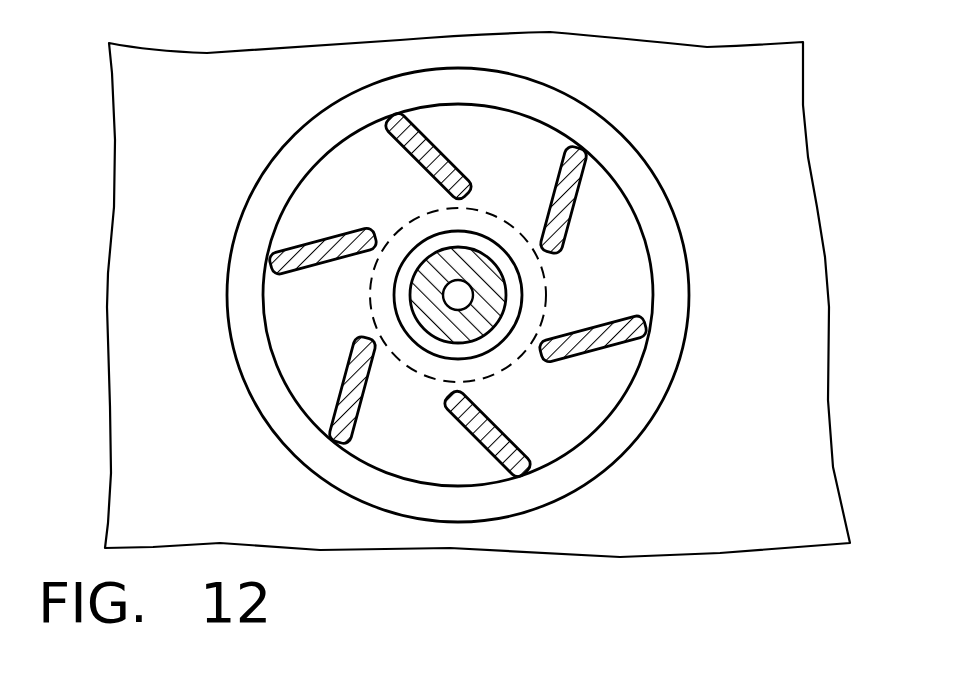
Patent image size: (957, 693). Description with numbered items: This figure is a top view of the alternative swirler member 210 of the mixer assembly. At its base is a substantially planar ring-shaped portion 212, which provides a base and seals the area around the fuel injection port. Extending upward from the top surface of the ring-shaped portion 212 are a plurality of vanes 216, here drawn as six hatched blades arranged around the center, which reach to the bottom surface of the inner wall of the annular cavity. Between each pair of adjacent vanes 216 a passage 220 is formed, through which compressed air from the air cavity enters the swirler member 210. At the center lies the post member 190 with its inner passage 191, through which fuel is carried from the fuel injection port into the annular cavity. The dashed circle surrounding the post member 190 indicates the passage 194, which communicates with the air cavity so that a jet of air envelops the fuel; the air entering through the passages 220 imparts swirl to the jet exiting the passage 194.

The swirler member 210 is at (508, 295).
The ring-shaped portion 212 is at (663, 362).
The vanes 216 is at (568, 204).
The passage 220 is at (518, 190).
The post member 190 is at (411, 276).
The inner passage 191 is at (446, 292).
The passage 194 is at (384, 331).